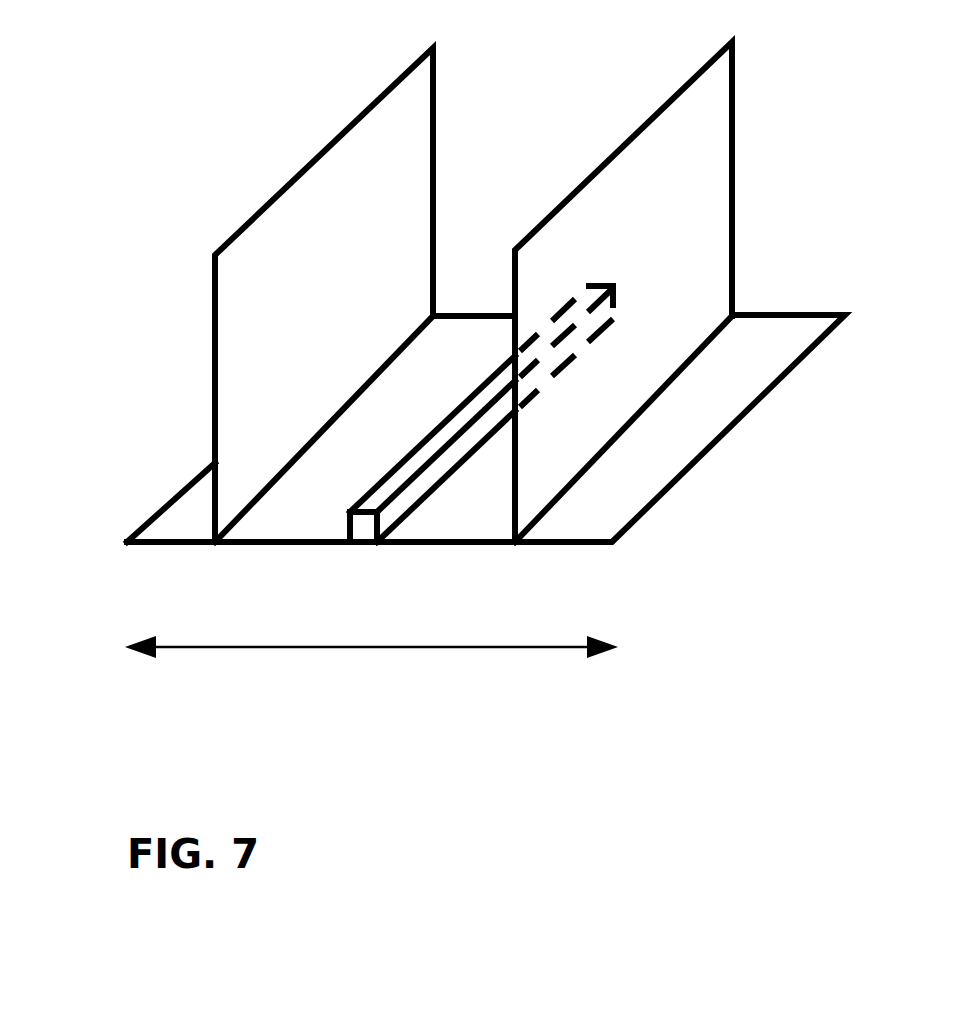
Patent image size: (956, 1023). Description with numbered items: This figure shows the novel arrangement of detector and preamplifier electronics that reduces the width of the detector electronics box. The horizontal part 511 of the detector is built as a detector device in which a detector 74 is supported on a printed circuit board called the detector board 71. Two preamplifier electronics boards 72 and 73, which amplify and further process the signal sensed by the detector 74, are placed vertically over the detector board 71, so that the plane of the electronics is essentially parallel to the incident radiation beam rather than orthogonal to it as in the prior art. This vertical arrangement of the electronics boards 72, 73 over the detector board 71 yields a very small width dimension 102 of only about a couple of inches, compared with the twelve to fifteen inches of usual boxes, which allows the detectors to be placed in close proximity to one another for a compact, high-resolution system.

The horizontal part of detector 511 is at (152, 228).
The detector board 71 is at (643, 492).
The preamplifier electronics board 72 is at (703, 232).
The preamplifier electronics board 73 is at (392, 197).
The detector 74 is at (440, 468).
The width dimension 102 is at (355, 657).